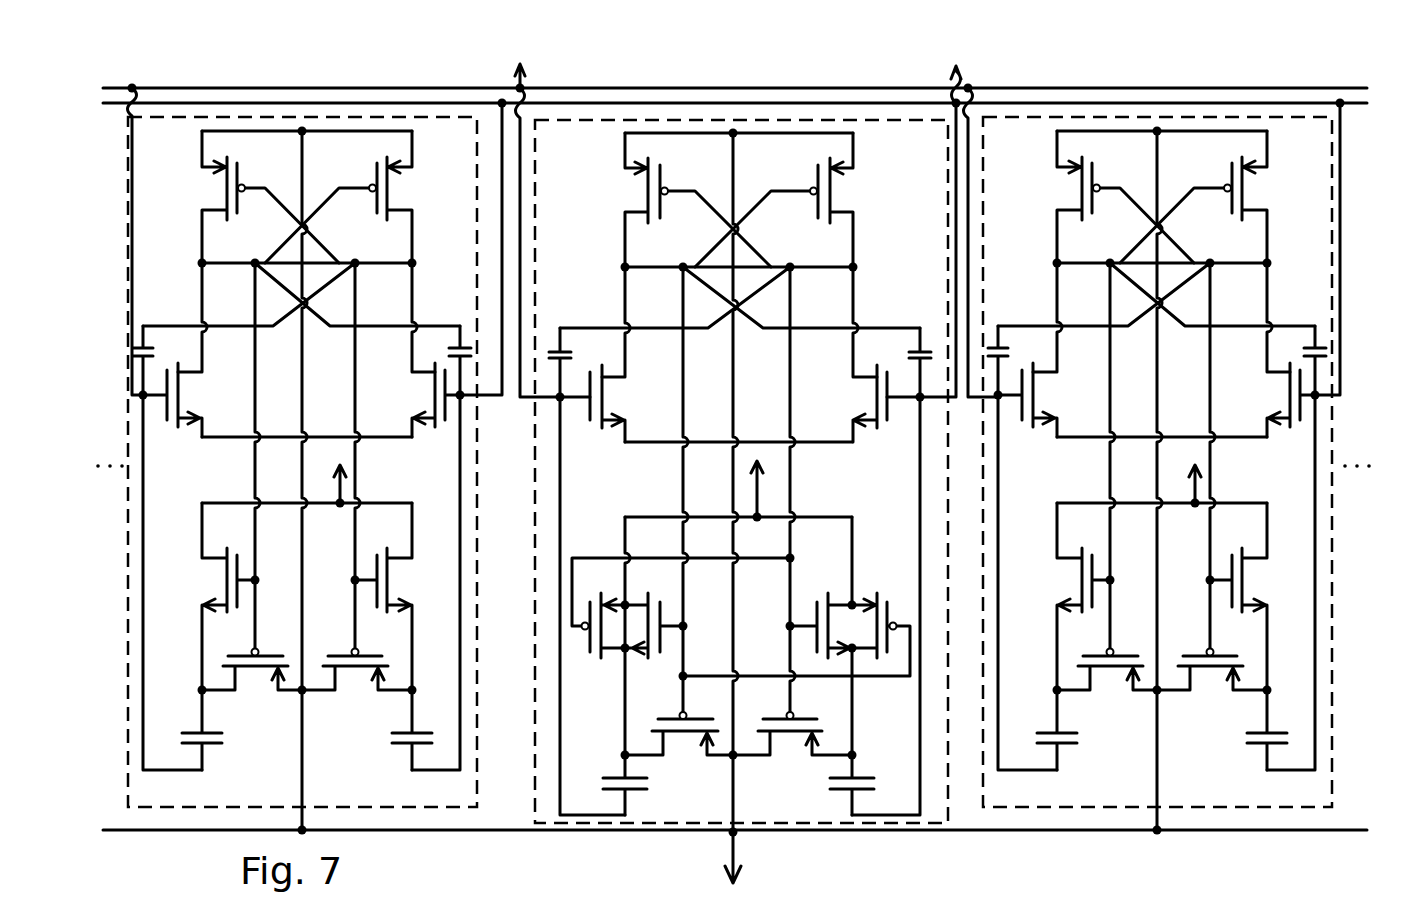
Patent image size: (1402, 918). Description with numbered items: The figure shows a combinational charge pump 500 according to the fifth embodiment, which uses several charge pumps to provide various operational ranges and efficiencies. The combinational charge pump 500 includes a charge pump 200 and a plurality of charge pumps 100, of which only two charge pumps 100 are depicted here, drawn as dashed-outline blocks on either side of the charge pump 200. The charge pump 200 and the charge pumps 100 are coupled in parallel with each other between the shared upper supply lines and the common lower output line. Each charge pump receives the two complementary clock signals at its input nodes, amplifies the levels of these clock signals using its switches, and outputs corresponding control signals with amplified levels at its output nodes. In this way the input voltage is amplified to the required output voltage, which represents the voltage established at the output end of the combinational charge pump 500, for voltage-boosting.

The charge pump 100 is at (418, 807).
The charge pump 200 is at (872, 823).
The combinational charge pump 500 is at (1085, 82).